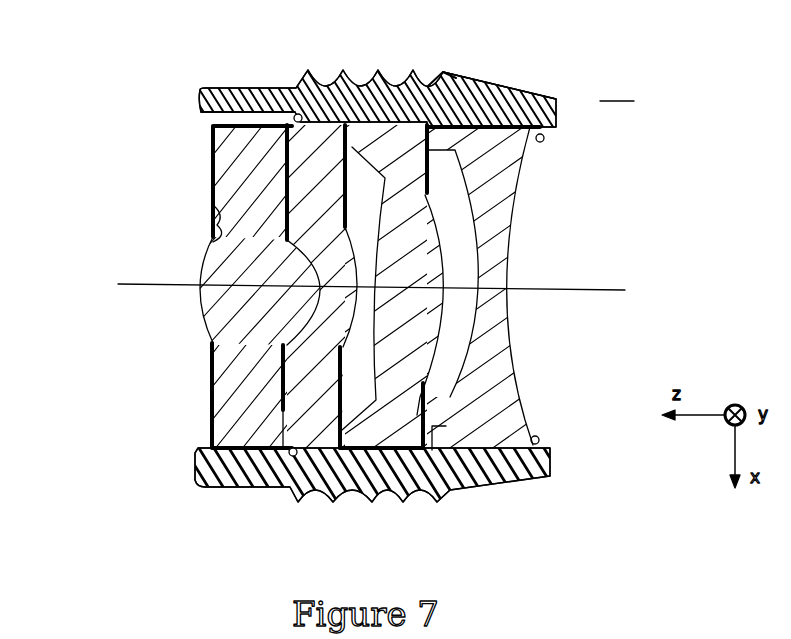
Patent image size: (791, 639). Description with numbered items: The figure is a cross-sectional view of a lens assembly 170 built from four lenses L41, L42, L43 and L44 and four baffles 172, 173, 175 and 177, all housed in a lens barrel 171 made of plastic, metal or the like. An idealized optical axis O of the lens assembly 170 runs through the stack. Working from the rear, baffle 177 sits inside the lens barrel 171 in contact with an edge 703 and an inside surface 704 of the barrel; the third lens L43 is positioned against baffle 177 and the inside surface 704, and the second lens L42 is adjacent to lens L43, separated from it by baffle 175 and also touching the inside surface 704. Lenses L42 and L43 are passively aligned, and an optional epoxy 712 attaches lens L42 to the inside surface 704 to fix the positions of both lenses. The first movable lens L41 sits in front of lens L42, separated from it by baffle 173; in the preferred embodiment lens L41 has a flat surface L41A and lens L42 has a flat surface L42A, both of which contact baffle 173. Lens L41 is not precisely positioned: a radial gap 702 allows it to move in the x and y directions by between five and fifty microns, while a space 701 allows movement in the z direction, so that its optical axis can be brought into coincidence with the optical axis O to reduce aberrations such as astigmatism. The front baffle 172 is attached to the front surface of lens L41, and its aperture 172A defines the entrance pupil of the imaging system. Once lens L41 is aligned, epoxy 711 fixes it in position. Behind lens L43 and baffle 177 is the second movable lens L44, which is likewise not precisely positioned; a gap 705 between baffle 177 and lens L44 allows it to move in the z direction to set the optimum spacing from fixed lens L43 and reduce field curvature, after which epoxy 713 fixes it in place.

The lens assembly 170 is at (617, 92).
The lens barrel 171 is at (272, 112).
The front baffle 172 is at (211, 343).
The aperture 172A is at (210, 242).
The baffle 173 is at (280, 368).
The baffle 175 is at (352, 140).
The baffle 177 is at (468, 88).
The space 701 is at (200, 133).
The radial gap 702 is at (212, 92).
The edge 703 is at (437, 98).
The inside surface 704 is at (438, 78).
The gap 705 is at (432, 428).
The epoxy 711 is at (211, 188).
The epoxy 712 is at (291, 458).
The epoxy 713 is at (543, 441).
The first movable lens L41 is at (203, 456).
The flat surface L41A is at (285, 380).
The second lens L42 is at (329, 462).
The flat surface L42A is at (280, 412).
The third lens L43 is at (378, 445).
The second movable lens L44 is at (475, 428).
The optical axis O is at (583, 290).